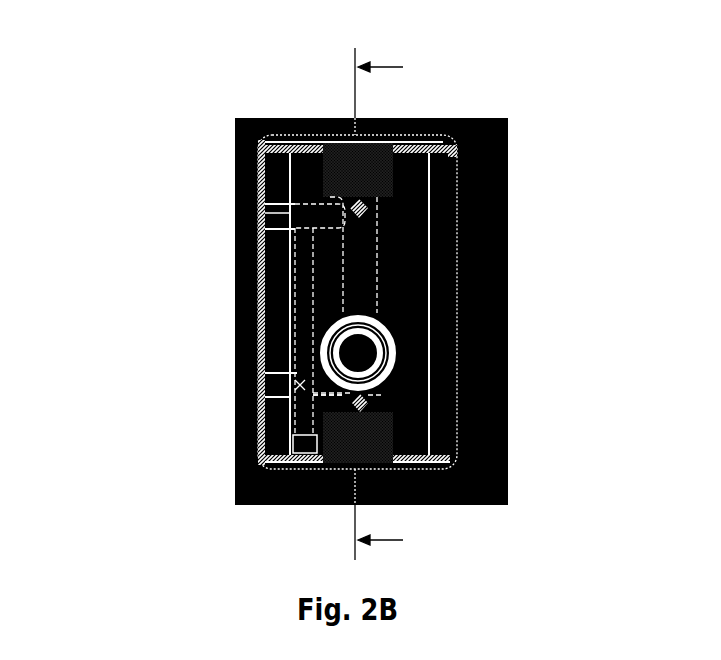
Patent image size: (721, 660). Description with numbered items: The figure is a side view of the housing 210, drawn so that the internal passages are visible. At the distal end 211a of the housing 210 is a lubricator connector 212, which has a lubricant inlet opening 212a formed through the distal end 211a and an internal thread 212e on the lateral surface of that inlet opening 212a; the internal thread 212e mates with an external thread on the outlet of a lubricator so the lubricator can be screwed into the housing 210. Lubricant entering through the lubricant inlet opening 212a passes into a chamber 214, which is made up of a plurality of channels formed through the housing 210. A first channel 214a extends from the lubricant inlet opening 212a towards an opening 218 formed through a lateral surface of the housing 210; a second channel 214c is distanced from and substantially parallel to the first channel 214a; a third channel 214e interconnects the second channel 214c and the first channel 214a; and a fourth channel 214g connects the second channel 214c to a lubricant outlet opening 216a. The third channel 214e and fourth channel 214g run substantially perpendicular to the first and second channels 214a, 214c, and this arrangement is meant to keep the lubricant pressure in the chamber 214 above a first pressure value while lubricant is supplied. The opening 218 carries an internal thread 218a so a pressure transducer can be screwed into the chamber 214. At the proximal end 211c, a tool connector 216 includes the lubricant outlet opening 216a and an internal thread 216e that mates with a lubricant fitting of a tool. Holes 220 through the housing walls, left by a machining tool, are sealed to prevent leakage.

The housing 210 is at (118, 50).
The distal end of housing 211a is at (295, 136).
The proximal end of housing 211c is at (282, 473).
The lubricator connector 212 is at (462, 161).
The internal thread 212e is at (393, 168).
The lubricant inlet opening 212a is at (362, 215).
The chamber 214 is at (239, 316).
The third channel 214e is at (335, 218).
The first channel 214a is at (350, 250).
The second channel 214c is at (297, 310).
The fourth channel 214g is at (261, 376).
The opening 218 is at (387, 351).
The internal thread 218a is at (363, 358).
The tool connector 216 is at (468, 416).
The lubricant outlet opening 216a is at (383, 390).
The internal thread 216e is at (395, 440).
The holes 220 is at (265, 213).